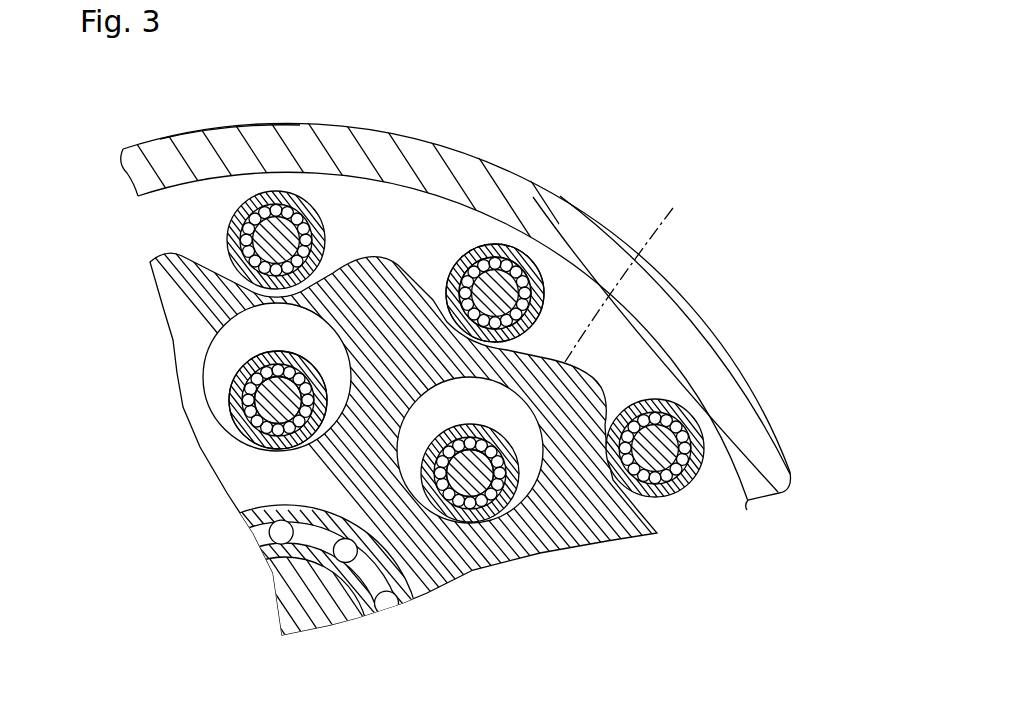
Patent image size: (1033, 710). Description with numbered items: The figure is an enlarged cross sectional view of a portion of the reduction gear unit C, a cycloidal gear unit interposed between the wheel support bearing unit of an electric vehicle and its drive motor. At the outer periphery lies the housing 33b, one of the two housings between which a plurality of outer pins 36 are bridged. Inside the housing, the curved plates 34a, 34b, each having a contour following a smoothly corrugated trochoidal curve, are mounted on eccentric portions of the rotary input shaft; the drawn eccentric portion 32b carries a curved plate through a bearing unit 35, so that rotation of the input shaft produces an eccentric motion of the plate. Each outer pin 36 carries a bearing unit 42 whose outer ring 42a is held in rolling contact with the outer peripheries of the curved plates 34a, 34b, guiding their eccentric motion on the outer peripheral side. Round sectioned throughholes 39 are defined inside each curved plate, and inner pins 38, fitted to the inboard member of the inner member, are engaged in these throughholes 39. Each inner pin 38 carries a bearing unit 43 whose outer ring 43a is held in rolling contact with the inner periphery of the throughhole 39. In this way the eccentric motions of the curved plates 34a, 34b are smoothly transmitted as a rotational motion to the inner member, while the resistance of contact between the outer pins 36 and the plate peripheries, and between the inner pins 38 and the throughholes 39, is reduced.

The reduction gear unit C is at (213, 124).
The housing 33b is at (273, 137).
The outer pin 36 is at (283, 232).
The bearing unit 42 is at (513, 262).
The outer ring 42a is at (528, 268).
The curved plate 34a is at (661, 336).
The curved plate 34b is at (593, 380).
The throughhole 39 is at (226, 352).
The outer ring 43a is at (240, 378).
The bearing unit 43 is at (247, 414).
The inner pin 38 is at (273, 410).
The eccentric portion 32b is at (326, 606).
The bearing unit 35 is at (390, 602).